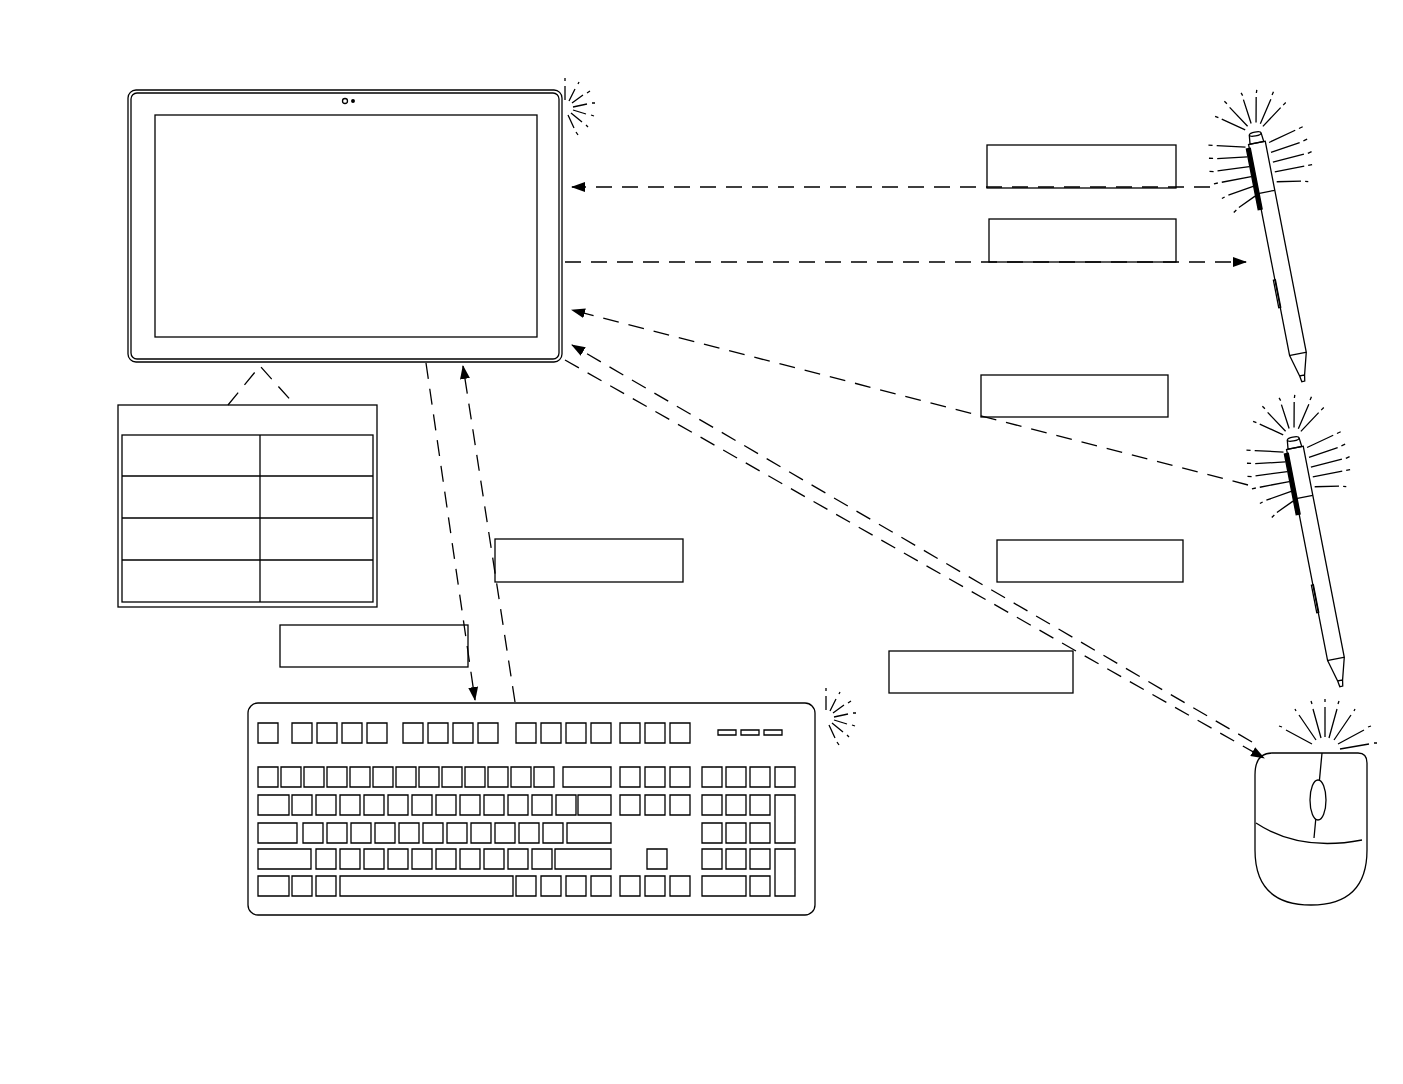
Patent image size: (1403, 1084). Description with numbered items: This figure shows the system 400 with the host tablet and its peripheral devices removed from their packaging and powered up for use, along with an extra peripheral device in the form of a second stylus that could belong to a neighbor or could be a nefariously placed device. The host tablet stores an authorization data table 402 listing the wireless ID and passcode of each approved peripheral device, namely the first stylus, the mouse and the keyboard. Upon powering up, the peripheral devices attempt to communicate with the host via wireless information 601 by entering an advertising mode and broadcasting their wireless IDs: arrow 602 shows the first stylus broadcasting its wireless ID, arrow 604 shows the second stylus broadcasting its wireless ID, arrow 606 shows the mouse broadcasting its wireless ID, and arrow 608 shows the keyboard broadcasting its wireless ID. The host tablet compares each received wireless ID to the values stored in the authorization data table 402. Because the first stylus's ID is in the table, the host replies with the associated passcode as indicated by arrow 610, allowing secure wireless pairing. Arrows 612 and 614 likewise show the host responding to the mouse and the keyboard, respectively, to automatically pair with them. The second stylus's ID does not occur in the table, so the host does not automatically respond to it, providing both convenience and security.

The system 400 is at (815, 86).
The authorization data table 402 is at (360, 430).
The wireless information 601 is at (1068, 120).
The arrow 602 is at (703, 186).
The arrow 604 is at (762, 356).
The arrow 606 is at (752, 438).
The arrow 608 is at (483, 513).
The arrow 610 is at (727, 262).
The arrow 612 is at (752, 471).
The arrow 614 is at (452, 549).